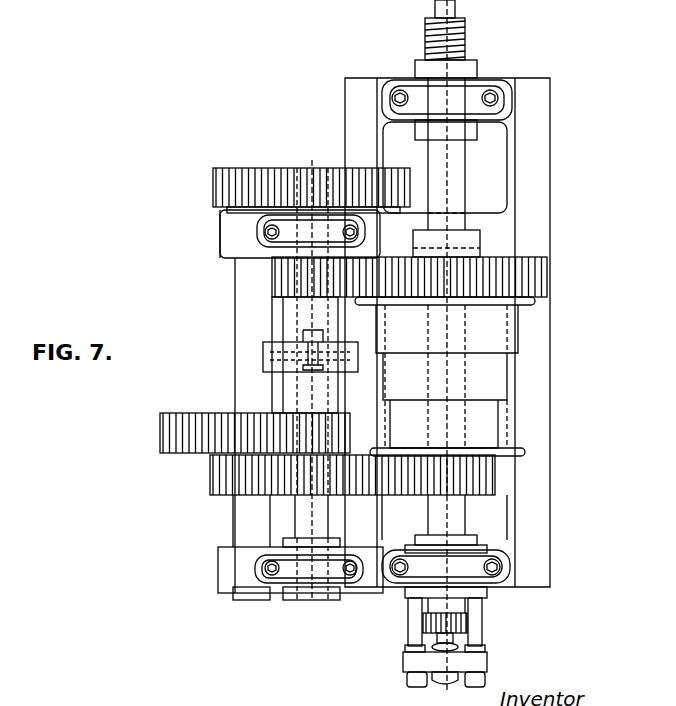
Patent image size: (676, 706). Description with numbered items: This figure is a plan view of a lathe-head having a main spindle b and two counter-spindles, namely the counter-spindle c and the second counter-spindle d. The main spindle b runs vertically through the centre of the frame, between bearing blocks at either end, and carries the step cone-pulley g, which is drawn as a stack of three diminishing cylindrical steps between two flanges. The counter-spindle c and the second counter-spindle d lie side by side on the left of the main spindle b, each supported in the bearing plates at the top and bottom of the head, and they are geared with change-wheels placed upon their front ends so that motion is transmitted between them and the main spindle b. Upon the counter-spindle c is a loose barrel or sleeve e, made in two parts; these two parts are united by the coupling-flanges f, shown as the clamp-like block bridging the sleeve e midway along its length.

The main spindle b is at (445, 345).
The counter-spindle c is at (297, 168).
The second counter-spindle d is at (235, 168).
The loose barrel or sleeve e is at (305, 355).
The coupling-flanges f is at (364, 368).
The step cone-pulley g is at (378, 376).